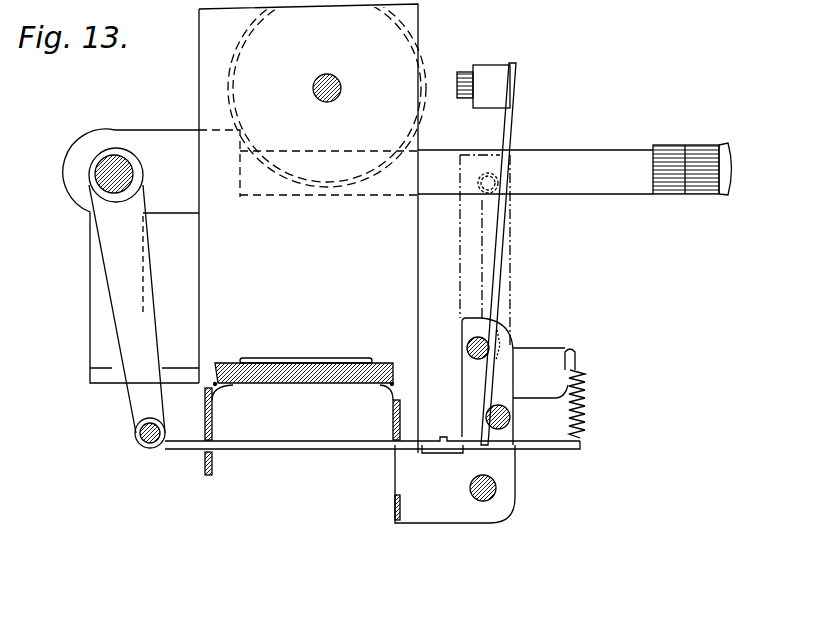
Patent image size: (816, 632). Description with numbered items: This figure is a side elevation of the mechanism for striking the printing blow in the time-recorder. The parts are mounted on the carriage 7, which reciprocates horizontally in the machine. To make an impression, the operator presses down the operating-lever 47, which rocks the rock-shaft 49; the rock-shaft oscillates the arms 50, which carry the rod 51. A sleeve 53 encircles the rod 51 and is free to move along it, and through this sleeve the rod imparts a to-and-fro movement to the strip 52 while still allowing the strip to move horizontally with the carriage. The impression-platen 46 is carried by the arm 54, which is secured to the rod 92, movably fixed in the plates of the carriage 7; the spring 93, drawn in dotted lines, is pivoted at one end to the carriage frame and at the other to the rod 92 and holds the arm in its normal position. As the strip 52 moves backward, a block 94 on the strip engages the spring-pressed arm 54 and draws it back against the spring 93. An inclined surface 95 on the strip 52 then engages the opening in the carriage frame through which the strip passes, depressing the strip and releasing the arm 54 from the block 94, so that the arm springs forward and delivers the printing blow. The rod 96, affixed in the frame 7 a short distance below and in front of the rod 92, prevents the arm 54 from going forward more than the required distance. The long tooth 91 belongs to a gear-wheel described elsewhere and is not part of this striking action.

The carriage 7 is at (415, 237).
The impression-platen 46 is at (460, 96).
The operating-lever 47 is at (595, 160).
The rock-shaft 49 is at (128, 160).
The arms 50 is at (152, 310).
The rod 51 is at (149, 446).
The strip 52 is at (250, 449).
The sleeve 53 is at (137, 438).
The arm 54 is at (509, 114).
The long tooth 91 is at (582, 404).
The rod 92 is at (469, 353).
The spring 93 is at (513, 278).
The block 94 is at (530, 448).
The inclined surface 95 is at (421, 454).
The rod 96 is at (506, 408).